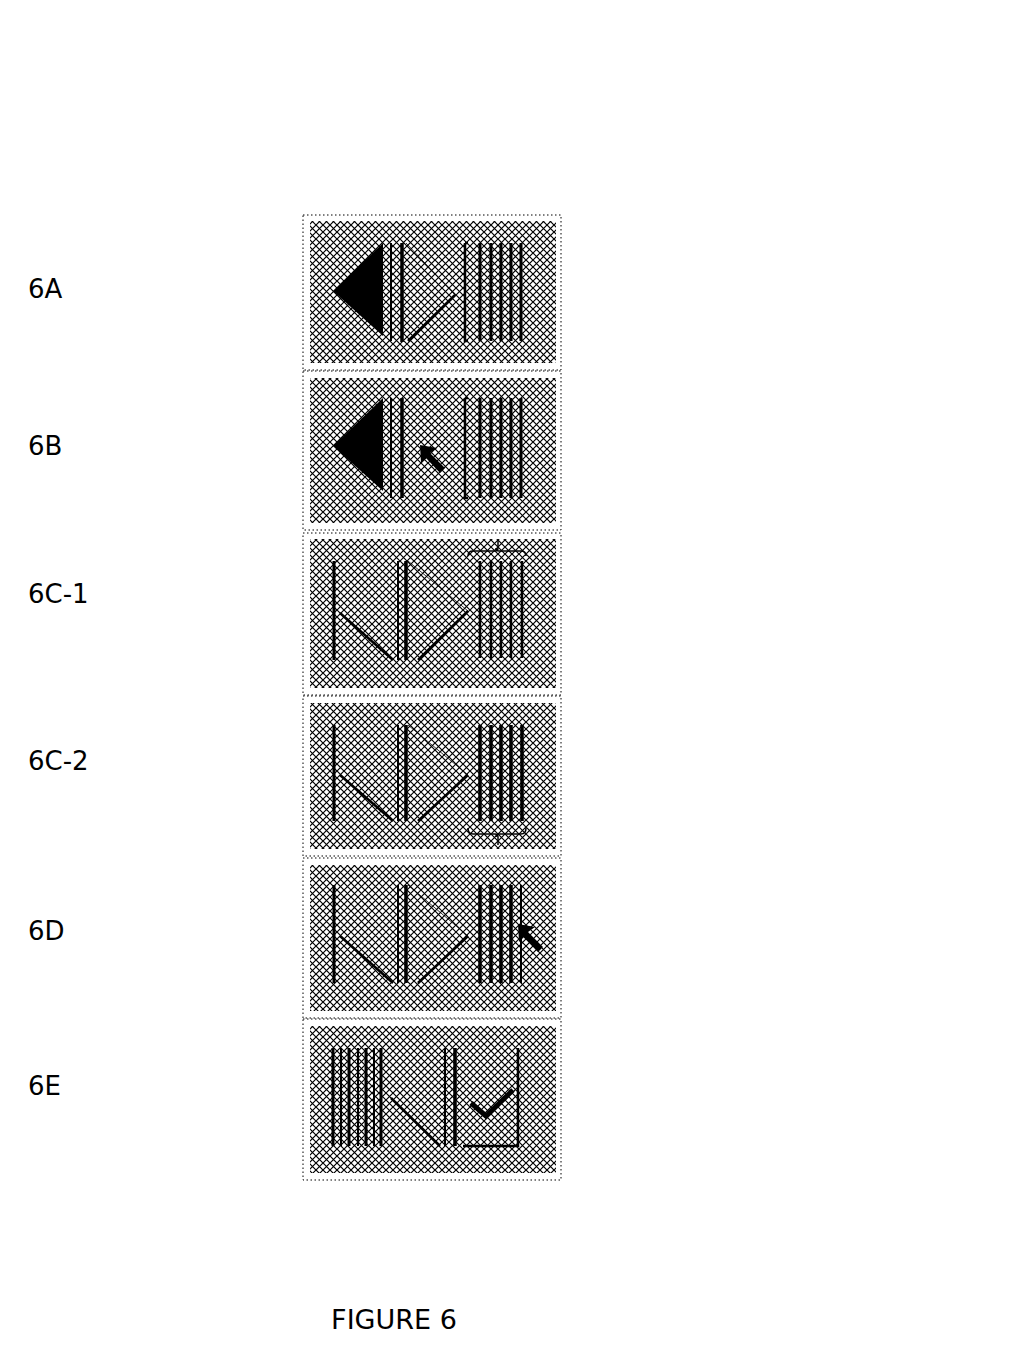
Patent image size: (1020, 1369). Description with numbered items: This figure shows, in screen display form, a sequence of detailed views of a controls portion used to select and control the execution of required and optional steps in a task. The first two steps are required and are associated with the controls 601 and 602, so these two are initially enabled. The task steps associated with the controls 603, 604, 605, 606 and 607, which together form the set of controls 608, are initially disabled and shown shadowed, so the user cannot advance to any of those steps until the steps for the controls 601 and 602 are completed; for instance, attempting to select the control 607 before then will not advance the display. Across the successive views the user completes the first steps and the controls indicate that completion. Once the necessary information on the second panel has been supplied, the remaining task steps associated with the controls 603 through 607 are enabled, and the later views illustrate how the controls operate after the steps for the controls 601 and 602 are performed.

The control 601 is at (387, 235).
The control 602 is at (455, 235).
The control 603 is at (467, 713).
The control 604 is at (479, 713).
The control 605 is at (490, 713).
The control 606 is at (502, 713).
The control 607 is at (515, 712).
The set of controls 608 is at (503, 538).